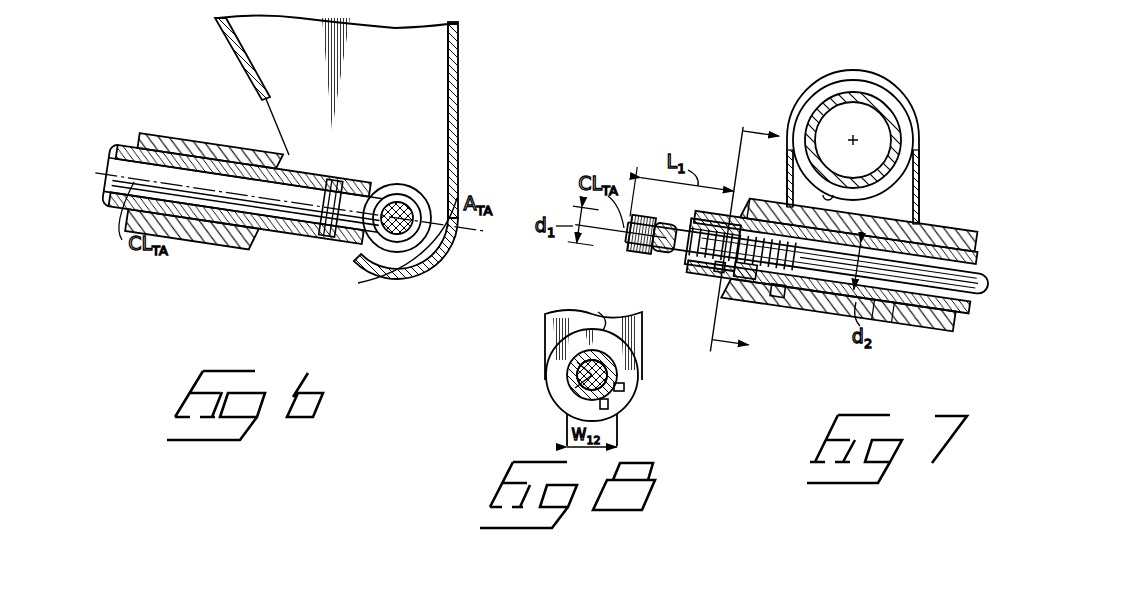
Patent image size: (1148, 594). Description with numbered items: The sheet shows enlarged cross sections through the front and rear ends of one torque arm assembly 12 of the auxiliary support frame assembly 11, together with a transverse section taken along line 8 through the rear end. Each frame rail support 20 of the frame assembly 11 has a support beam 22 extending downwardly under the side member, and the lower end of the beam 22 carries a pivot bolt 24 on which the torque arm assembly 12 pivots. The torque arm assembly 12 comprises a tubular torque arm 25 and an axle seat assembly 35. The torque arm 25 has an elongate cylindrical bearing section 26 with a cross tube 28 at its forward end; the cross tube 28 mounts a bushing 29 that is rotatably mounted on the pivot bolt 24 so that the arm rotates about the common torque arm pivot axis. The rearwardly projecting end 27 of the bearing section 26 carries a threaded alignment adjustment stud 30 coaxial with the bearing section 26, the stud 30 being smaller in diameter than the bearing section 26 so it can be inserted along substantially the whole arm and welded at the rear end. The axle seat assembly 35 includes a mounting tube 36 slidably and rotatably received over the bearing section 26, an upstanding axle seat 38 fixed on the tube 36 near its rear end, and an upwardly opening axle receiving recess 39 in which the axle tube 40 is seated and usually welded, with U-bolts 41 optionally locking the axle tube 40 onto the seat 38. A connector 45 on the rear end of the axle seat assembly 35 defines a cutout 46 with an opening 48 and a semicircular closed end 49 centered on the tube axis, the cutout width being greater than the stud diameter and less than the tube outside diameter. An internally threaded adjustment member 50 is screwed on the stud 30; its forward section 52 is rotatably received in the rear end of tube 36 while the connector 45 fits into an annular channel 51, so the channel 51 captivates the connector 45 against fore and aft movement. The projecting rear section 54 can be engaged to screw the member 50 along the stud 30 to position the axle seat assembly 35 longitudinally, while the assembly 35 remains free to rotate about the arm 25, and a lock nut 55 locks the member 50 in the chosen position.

In FIG. 6, the auxiliary support frame assembly 11 is at (471, 168).
In FIG. 6, the torque arm assembly 12 is at (173, 124).
In FIG. 7, the torque arm assembly 12 is at (716, 148).
In FIG. 6, the frame rail support 20 is at (461, 72).
In FIG. 6, the support beam 22 is at (456, 117).
In FIG. 6, the pivot bolt 24 is at (392, 231).
In FIG. 6, the tubular torque arm 25 is at (277, 238).
In FIG. 7, the tubular torque arm 25 is at (957, 316).
In FIG. 6, the bearing section 26 is at (288, 158).
In FIG. 7, the bearing section 26 is at (895, 316).
In FIG. 7, the rearwardly projecting end 27 is at (782, 302).
In FIG. 6, the cross tube 28 is at (386, 194).
In FIG. 6, the bushing 29 is at (403, 202).
In FIG. 6, the threaded alignment adjustment stud 30 is at (190, 203).
In FIG. 7, the threaded alignment adjustment stud 30 is at (643, 248).
In FIG. 8, the threaded alignment adjustment stud 30 is at (604, 370).
In FIG. 7, the axle seat assembly 35 is at (914, 186).
In FIG. 8, the axle seat assembly 35 is at (646, 336).
In FIG. 6, the mounting tube 36 is at (232, 243).
In FIG. 7, the mounting tube 36 is at (812, 305).
In FIG. 8, the mounting tube 36 is at (570, 412).
In FIG. 7, the axle seat 38 is at (917, 211).
In FIG. 8, the axle seat 38 is at (547, 334).
In FIG. 7, the axle receiving recess 39 is at (833, 190).
In FIG. 7, the axle tube 40 is at (899, 120).
In FIG. 7, the U-bolt 41 is at (889, 90).
In FIG. 7, the connector 45 is at (735, 210).
In FIG. 8, the connector 45 is at (623, 355).
In FIG. 8, the cutout 46 is at (624, 387).
In FIG. 8, the opening 48 is at (608, 404).
In FIG. 8, the semicircular closed end 49 is at (603, 328).
In FIG. 7, the adjustment member 50 is at (689, 274).
In FIG. 8, the adjustment member 50 is at (567, 378).
In FIG. 7, the channel 51 is at (713, 280).
In FIG. 8, the channel 51 is at (574, 394).
In FIG. 7, the forward section 52 is at (746, 290).
In FIG. 7, the rear section 54 is at (716, 225).
In FIG. 7, the lock nut 55 is at (668, 226).
In FIG. 7, the section line 8- 8 is at (715, 247).